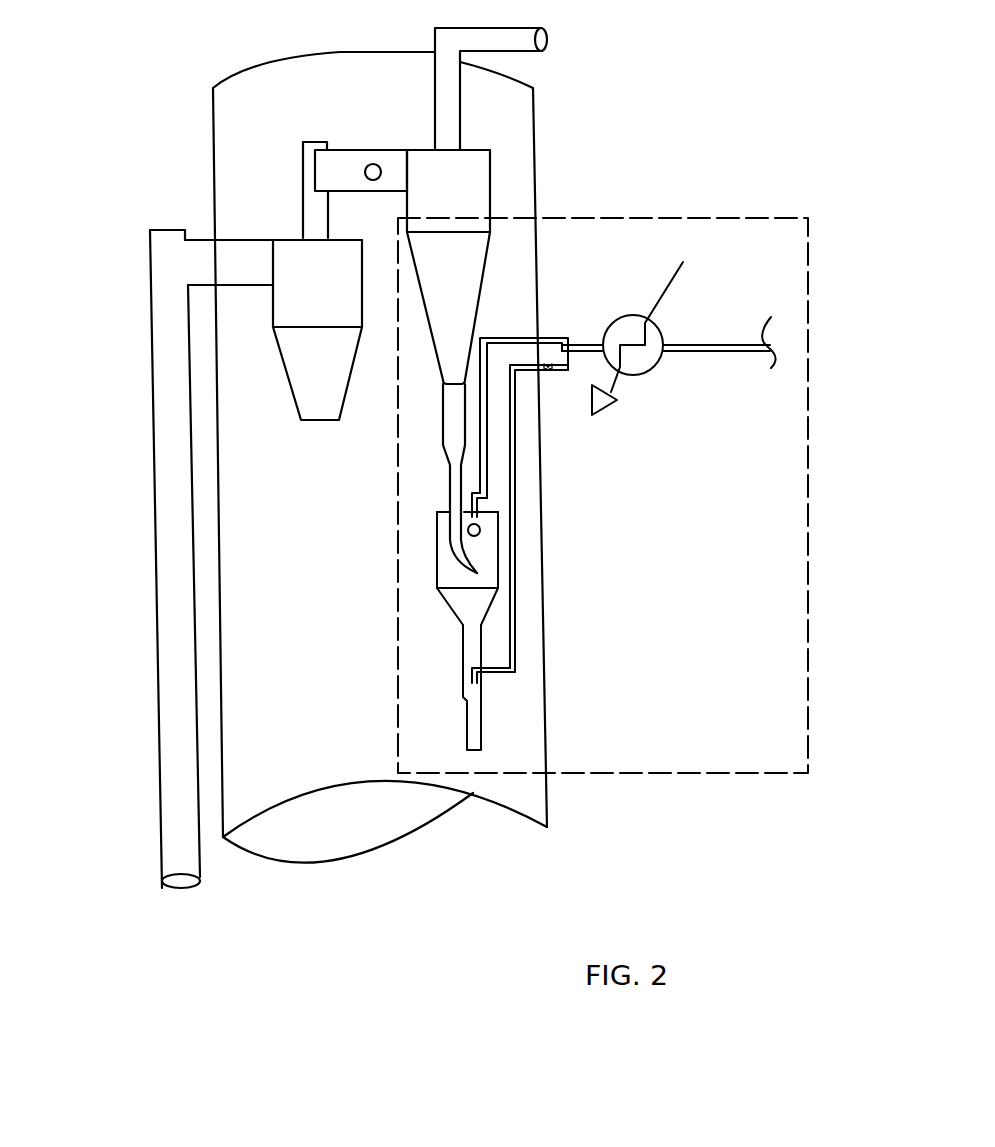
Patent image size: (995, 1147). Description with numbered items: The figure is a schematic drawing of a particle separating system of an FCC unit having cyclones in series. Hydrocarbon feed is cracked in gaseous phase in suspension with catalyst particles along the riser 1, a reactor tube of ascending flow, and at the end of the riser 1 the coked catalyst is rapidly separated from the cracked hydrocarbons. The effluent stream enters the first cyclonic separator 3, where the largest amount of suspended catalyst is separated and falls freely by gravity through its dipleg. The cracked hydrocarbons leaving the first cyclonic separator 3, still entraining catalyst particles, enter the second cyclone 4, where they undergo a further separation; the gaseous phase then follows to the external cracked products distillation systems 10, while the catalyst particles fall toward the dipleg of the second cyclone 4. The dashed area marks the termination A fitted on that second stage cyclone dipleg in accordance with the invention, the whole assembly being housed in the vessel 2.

The riser 1 is at (170, 607).
The reactor vessel 2 is at (213, 111).
The first cyclonic separator 3 is at (317, 362).
The second cyclone 4 is at (477, 171).
The external cracked products distillation systems 10 is at (507, 39).
The termination A is at (808, 462).